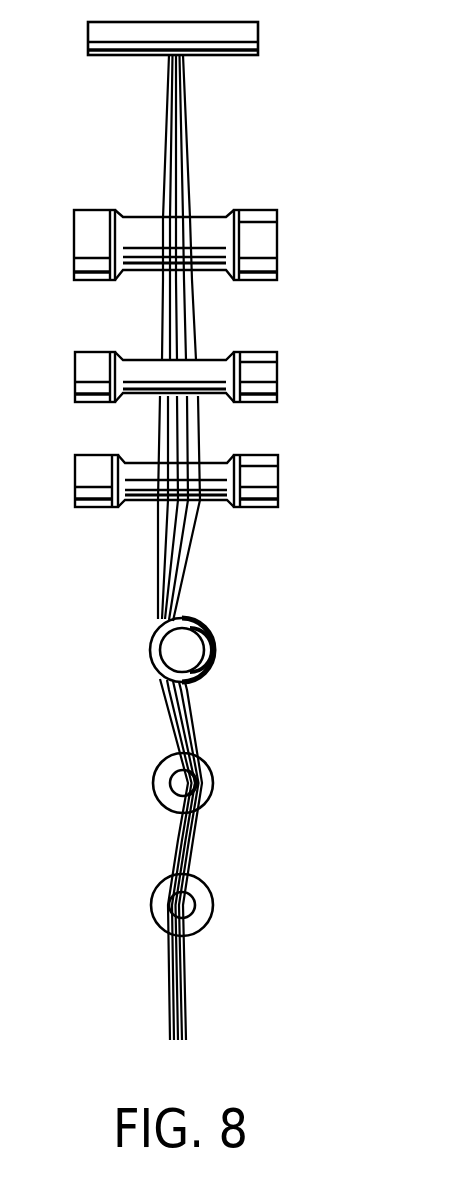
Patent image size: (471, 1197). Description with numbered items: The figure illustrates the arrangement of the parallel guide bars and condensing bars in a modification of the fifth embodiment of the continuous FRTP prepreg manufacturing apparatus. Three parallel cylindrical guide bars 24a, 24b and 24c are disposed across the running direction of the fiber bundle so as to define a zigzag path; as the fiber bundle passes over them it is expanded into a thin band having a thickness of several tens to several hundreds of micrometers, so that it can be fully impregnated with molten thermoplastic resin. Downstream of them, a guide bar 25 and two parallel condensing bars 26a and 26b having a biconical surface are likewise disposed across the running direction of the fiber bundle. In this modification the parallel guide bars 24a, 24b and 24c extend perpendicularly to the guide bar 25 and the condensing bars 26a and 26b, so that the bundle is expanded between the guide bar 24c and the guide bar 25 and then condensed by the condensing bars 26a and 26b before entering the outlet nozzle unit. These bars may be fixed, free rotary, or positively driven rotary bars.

The parallel guide bar 24a is at (92, 237).
The parallel guide bar 24b is at (92, 365).
The parallel guide bar 24c is at (90, 488).
The guide bar 25 is at (185, 648).
The condensing bar 26a is at (208, 783).
The condensing bar 26b is at (202, 907).